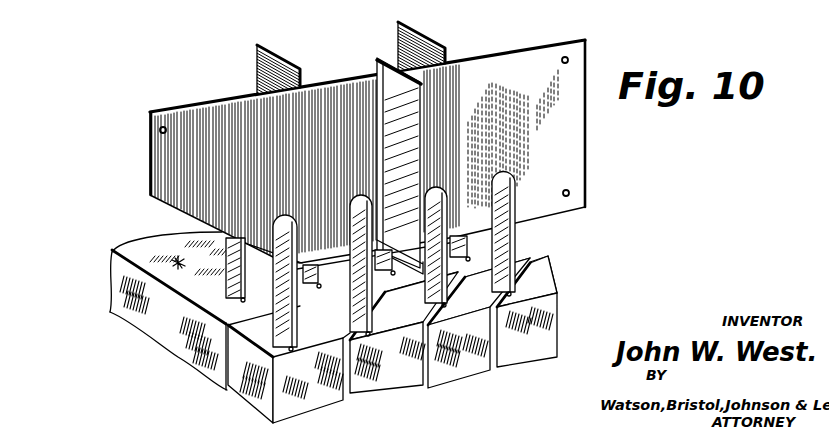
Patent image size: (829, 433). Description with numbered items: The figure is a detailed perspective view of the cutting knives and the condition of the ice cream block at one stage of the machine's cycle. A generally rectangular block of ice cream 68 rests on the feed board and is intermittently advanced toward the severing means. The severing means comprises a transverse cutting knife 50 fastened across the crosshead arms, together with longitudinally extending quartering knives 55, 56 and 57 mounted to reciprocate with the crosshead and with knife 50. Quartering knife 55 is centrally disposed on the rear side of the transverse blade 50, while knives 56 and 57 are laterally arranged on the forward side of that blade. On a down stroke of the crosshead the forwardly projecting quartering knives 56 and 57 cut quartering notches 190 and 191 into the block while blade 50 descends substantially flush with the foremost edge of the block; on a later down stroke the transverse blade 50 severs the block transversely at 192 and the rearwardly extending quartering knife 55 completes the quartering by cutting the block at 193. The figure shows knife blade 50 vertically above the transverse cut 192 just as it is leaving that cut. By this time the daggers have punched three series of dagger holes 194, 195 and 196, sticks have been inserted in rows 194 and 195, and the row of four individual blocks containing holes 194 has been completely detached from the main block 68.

The transverse cutting knife 50 is at (565, 126).
The quartering knife 55 is at (410, 118).
The quartering knife 56 is at (257, 68).
The quartering knife 57 is at (397, 33).
The block of ice cream 68 is at (111, 258).
The quartering notch 190 is at (355, 390).
The quartering notch 191 is at (497, 367).
The transverse cut 192 is at (223, 360).
The quartering cut 193 is at (428, 385).
The dagger holes 194 is at (293, 341).
The dagger holes 195 is at (240, 302).
The dagger holes 196 is at (173, 262).